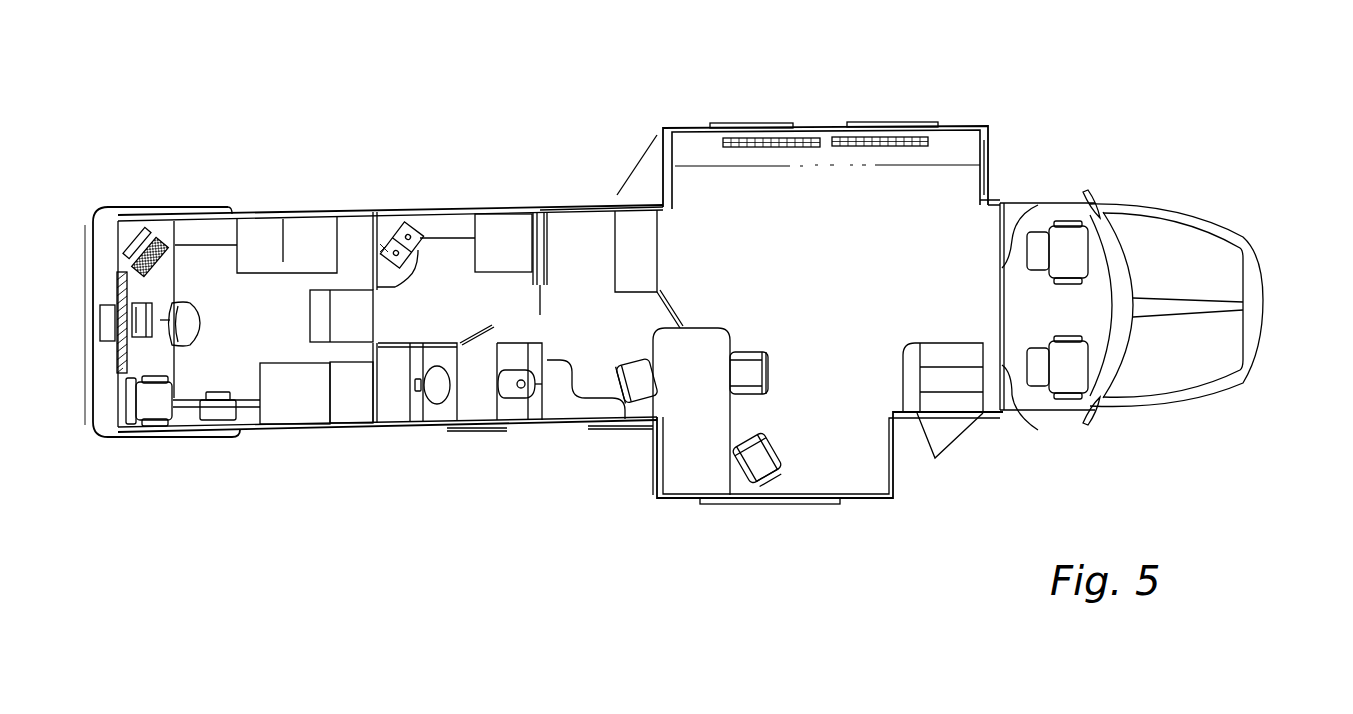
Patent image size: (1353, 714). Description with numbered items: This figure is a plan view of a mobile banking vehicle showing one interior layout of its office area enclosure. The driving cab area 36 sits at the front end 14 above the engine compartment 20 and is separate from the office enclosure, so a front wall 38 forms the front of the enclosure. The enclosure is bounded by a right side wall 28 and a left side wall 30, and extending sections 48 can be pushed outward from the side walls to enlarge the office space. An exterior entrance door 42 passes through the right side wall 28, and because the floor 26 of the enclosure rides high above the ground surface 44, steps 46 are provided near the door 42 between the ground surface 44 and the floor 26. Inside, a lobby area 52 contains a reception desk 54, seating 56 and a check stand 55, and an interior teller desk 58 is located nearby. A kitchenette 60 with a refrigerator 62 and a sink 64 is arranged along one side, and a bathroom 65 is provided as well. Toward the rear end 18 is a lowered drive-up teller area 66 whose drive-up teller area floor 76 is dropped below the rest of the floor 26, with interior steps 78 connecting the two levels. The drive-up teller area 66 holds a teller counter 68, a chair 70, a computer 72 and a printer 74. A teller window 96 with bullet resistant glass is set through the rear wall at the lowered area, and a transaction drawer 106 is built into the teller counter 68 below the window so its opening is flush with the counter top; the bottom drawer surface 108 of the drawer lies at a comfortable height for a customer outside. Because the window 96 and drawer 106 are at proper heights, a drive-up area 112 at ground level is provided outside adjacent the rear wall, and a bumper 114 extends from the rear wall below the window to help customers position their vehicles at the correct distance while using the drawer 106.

The front end 14 is at (1242, 393).
The rear end 18 is at (125, 462).
The engine compartment 20 is at (1190, 262).
The floor 26 is at (859, 386).
The right side wall 28 is at (405, 423).
The left side wall 30 is at (575, 206).
The driving cab area 36 is at (1052, 218).
The front wall 38 is at (1003, 265).
The exterior entrance door 42 is at (957, 447).
The ground surface 44 is at (561, 496).
The steps 46 is at (945, 385).
The extending sections 48 is at (900, 112).
The lobby area 52 is at (935, 196).
The reception desk 54 is at (710, 413).
The check stand 55 is at (808, 160).
The seating 56 is at (757, 353).
The interior teller desk 58 is at (640, 252).
The kitchenette 60 is at (456, 250).
The refrigerator 62 is at (500, 235).
The sink 64 is at (402, 240).
The bathroom 65 is at (473, 402).
The lowered drive-up teller area 66 is at (243, 378).
The teller counter 68 is at (207, 403).
The chair 70 is at (186, 318).
The computer 72 is at (137, 253).
The printer 74 is at (125, 393).
The drive-up teller area floor 76 is at (284, 359).
The interior steps 78 is at (337, 310).
The teller window 96 is at (118, 277).
The transaction drawer 106 is at (100, 345).
The bottom drawer surface 108 is at (106, 312).
The drive-up area 112 is at (64, 339).
The bumper 114 is at (100, 205).